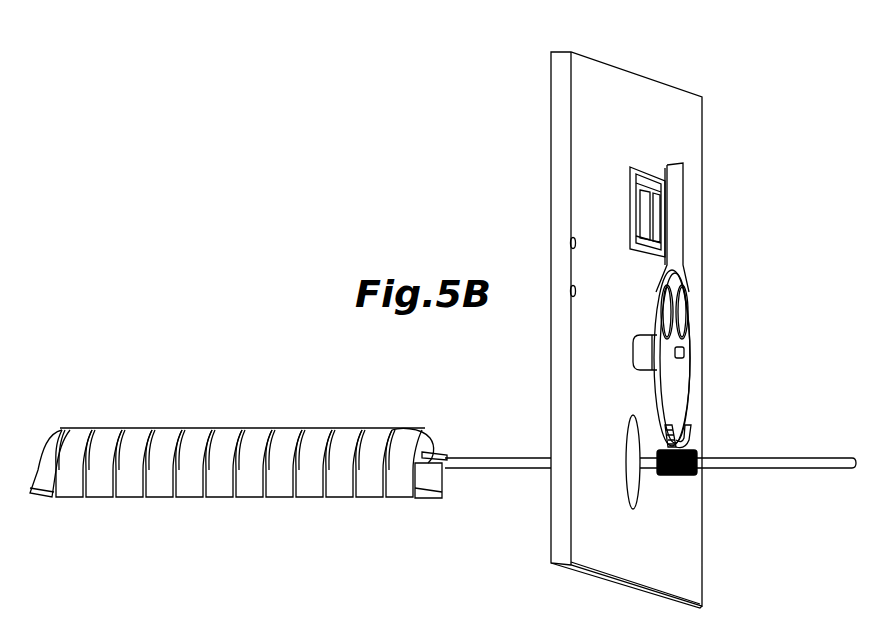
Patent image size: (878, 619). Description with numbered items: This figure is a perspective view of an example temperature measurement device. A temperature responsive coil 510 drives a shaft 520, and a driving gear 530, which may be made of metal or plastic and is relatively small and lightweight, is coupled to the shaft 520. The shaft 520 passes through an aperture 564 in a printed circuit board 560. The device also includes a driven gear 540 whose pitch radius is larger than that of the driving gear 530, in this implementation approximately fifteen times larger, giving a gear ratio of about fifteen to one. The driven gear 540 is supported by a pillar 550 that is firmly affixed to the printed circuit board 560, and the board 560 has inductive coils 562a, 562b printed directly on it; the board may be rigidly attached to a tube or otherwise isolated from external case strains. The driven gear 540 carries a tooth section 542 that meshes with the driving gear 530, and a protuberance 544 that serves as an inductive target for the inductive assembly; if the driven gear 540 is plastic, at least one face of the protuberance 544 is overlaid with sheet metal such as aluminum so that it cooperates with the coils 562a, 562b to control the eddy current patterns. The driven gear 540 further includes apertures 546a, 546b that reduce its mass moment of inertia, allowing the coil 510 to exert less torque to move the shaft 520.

The temperature responsive coil 510 is at (245, 498).
The shaft 520 is at (830, 470).
The driving gear 530 is at (700, 482).
The driven gear 540 is at (690, 372).
The tooth section 542 is at (698, 442).
The protuberance 544 is at (683, 191).
The aperture 546a is at (683, 310).
The aperture 546b is at (672, 323).
The pillar 550 is at (643, 336).
The printed circuit board 560 is at (697, 123).
The inductive coil 562a is at (655, 237).
The inductive coil 562b is at (658, 215).
The aperture 564 is at (640, 495).